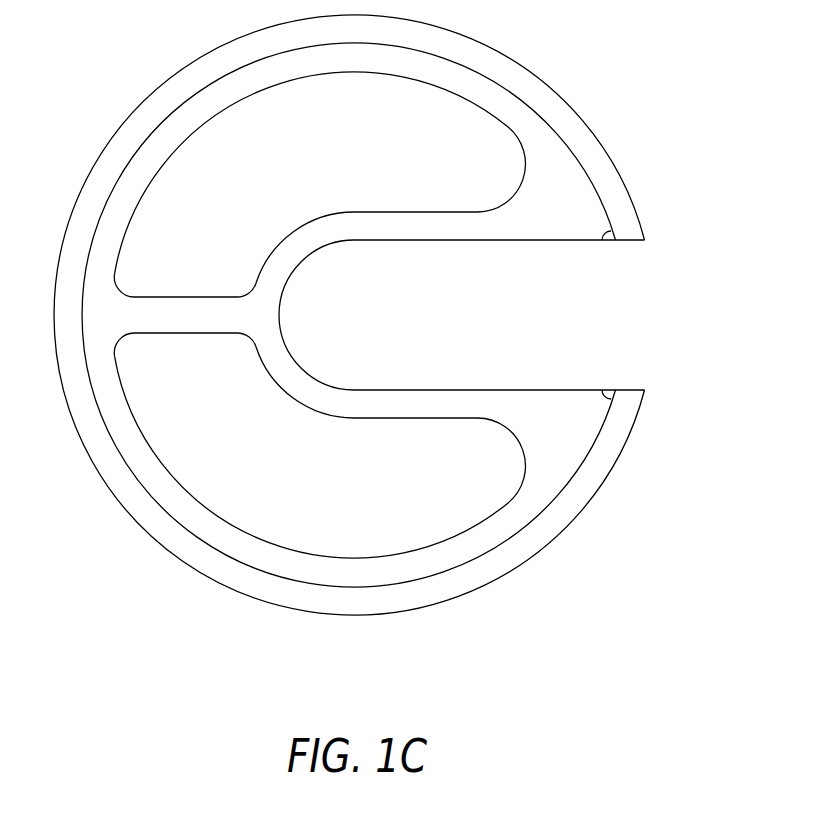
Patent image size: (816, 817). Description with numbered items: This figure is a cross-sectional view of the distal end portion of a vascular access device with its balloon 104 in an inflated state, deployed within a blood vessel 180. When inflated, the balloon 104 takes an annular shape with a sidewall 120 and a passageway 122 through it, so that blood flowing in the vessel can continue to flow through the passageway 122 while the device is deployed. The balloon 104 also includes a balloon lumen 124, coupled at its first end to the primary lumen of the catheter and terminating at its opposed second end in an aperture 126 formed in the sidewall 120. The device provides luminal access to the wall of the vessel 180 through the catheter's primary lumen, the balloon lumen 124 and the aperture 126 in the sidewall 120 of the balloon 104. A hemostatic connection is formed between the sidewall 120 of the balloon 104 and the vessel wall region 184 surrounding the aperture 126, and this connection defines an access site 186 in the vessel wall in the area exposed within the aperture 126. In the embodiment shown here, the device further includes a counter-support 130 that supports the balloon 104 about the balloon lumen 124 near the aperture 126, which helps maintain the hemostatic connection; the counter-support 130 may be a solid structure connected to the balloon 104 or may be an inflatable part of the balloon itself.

The balloon 104 is at (430, 563).
The sidewall 120 is at (603, 202).
The passageway 122 is at (197, 445).
The balloon lumen 124 is at (498, 350).
The aperture 126 is at (601, 316).
The counter-support 130 is at (163, 310).
The blood vessel 180 is at (165, 80).
The vessel wall region 184 is at (382, 315).
The access site 186 is at (647, 277).